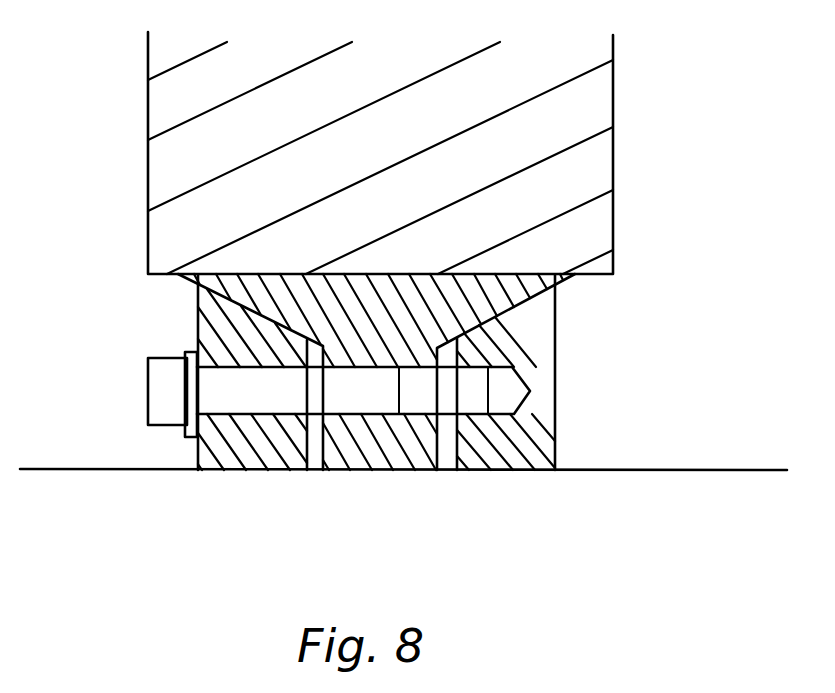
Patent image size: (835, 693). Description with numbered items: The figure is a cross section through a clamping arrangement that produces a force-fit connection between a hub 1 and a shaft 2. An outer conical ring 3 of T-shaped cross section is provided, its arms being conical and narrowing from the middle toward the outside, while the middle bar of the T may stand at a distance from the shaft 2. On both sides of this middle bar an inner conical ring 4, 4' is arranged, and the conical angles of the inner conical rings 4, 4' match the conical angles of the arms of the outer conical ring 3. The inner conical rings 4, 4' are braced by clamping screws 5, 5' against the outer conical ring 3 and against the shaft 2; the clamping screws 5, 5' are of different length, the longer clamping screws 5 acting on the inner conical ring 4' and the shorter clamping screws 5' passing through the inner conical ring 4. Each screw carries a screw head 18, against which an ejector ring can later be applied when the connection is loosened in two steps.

The hub 1 is at (587, 105).
The shaft 2 is at (663, 503).
The outer conical ring 3 is at (378, 453).
The inner conical ring 4 is at (219, 372).
The inner conical ring 4' is at (542, 372).
The clamping screw 5 is at (492, 390).
The clamping screw 5' is at (402, 390).
The screw head 18 is at (163, 387).